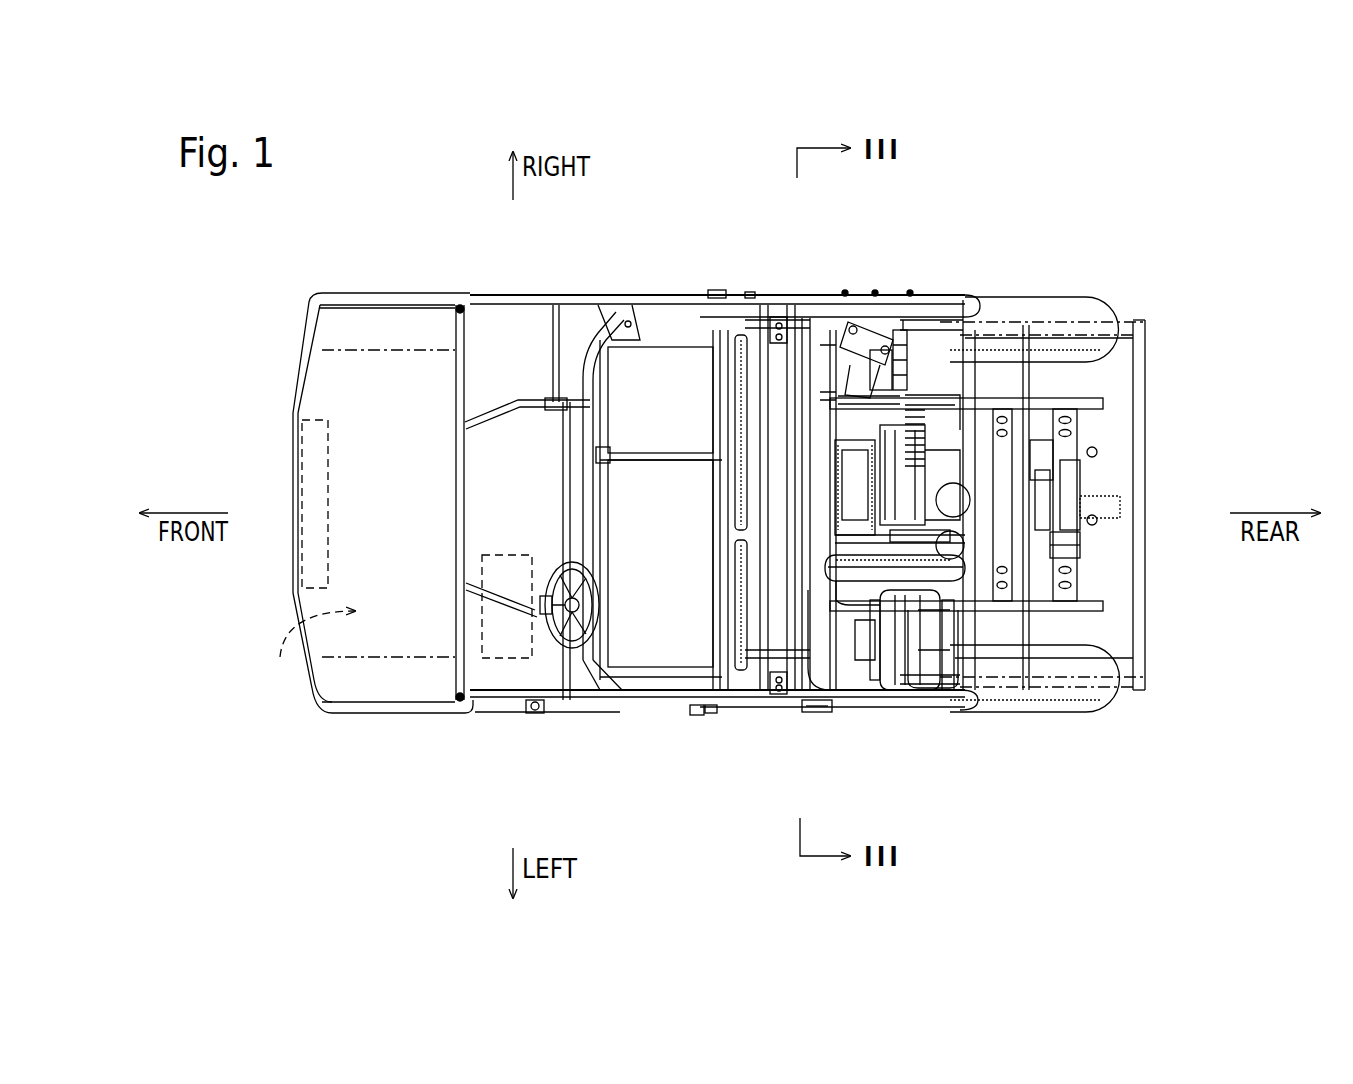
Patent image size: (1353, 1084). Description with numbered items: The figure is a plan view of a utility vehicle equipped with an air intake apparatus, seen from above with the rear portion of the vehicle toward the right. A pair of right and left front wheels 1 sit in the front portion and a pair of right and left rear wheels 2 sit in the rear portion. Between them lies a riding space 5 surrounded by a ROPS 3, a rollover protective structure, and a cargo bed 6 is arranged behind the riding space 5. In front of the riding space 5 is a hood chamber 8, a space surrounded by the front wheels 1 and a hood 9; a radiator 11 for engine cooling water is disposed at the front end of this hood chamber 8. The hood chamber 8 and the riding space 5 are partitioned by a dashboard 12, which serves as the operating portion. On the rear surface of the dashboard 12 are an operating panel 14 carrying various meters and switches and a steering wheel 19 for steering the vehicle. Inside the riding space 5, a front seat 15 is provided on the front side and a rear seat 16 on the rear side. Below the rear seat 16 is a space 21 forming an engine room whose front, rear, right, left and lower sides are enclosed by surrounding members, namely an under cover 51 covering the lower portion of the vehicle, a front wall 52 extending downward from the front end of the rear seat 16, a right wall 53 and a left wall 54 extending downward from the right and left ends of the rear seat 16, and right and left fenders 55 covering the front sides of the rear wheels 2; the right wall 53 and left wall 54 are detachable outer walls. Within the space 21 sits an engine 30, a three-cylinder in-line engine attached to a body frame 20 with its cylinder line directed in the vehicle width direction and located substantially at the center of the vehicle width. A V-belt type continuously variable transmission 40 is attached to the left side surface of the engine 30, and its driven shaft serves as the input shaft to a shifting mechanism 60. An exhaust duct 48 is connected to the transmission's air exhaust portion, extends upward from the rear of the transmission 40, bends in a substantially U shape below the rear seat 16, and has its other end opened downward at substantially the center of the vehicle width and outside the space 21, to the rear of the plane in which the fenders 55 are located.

The front wheels 1 is at (350, 292).
The rear wheels 2 is at (1052, 297).
The ROPS 3 is at (581, 302).
The riding space 5 is at (515, 338).
The cargo bed 6 is at (1152, 318).
The hood chamber 8 is at (297, 622).
The hood 9 is at (295, 595).
The radiator 11 is at (318, 480).
The dashboard 12 is at (533, 700).
The operating panel 14 is at (494, 700).
The front seat 15 is at (652, 370).
The rear seat 16 is at (892, 713).
The steering wheel 19 is at (565, 702).
The body frame 20 is at (1080, 398).
The space (engine room) 21 is at (930, 708).
The engine 30 is at (790, 300).
The V-belt type continuously variable transmission 40 is at (862, 590).
The exhaust duct 48 is at (1080, 548).
The under cover 51 is at (893, 630).
The front wall 52 is at (760, 300).
The right wall 53 is at (850, 300).
The left wall 54 is at (809, 712).
The fenders 55 is at (920, 300).
The shifting mechanism 60 is at (1080, 452).